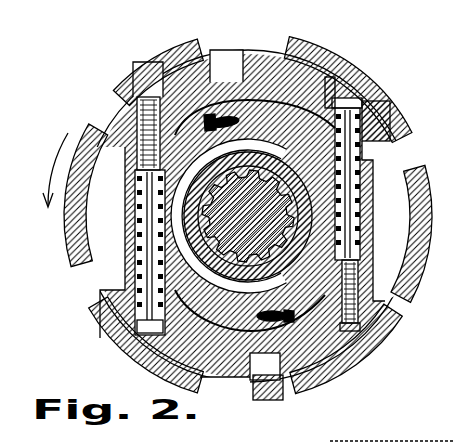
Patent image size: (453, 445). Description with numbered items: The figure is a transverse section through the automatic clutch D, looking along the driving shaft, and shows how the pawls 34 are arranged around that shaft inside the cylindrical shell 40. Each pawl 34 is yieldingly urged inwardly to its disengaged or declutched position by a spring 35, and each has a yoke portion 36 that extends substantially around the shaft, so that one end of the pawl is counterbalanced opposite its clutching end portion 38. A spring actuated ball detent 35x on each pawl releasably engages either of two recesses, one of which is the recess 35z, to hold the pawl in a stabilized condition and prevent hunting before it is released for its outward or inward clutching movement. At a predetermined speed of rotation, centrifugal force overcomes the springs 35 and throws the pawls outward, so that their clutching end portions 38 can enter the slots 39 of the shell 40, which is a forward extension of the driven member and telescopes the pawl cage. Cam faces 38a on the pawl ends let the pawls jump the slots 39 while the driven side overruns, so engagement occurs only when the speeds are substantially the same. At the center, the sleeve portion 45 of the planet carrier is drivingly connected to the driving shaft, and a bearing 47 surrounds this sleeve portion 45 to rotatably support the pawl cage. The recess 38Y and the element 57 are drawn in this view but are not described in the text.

The pawl 34 is at (272, 97).
The spring 35 is at (352, 146).
The spring actuated ball detent 35x is at (178, 64).
The recess 35z is at (282, 358).
The yoke portion 36 is at (318, 383).
The clutching end portion 38 is at (304, 54).
The cam face 38a is at (257, 66).
The lug 38Y is at (300, 355).
The slot 39 is at (240, 60).
The cylindrical shell 40 is at (330, 64).
The sleeve portion 45 is at (322, 209).
The bearing 47 is at (236, 157).
The pin 57 is at (283, 339).
The automatic clutch D is at (208, 118).